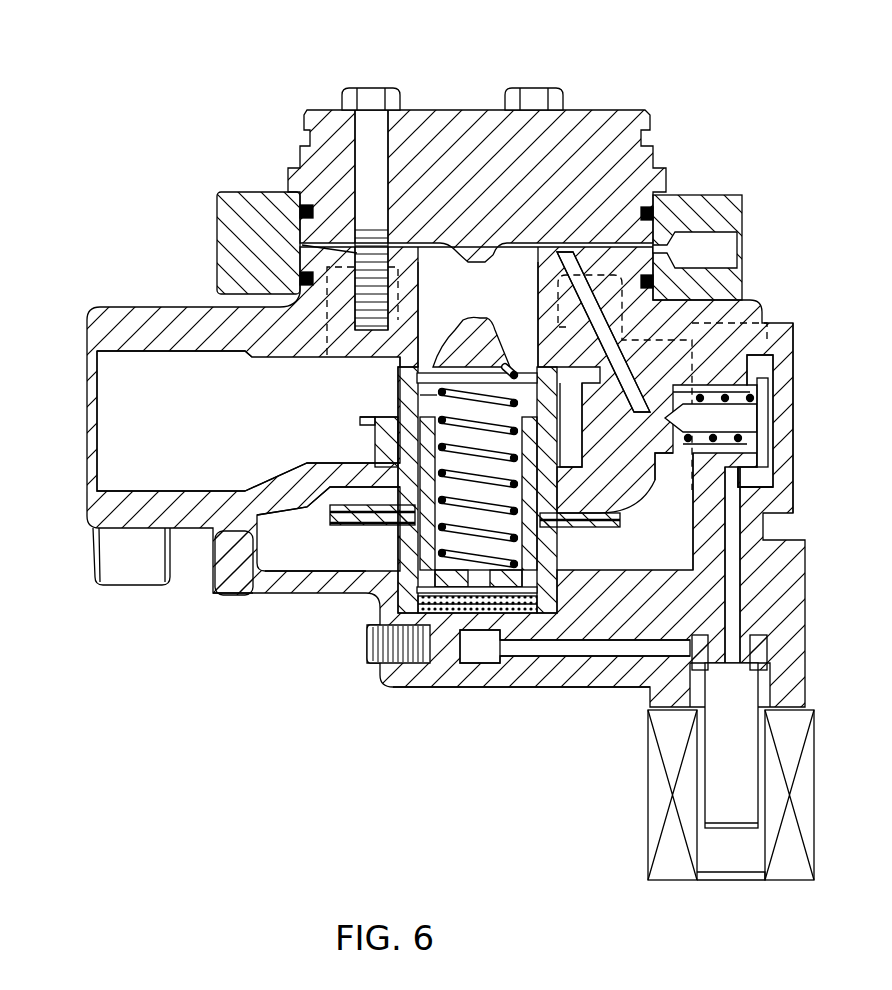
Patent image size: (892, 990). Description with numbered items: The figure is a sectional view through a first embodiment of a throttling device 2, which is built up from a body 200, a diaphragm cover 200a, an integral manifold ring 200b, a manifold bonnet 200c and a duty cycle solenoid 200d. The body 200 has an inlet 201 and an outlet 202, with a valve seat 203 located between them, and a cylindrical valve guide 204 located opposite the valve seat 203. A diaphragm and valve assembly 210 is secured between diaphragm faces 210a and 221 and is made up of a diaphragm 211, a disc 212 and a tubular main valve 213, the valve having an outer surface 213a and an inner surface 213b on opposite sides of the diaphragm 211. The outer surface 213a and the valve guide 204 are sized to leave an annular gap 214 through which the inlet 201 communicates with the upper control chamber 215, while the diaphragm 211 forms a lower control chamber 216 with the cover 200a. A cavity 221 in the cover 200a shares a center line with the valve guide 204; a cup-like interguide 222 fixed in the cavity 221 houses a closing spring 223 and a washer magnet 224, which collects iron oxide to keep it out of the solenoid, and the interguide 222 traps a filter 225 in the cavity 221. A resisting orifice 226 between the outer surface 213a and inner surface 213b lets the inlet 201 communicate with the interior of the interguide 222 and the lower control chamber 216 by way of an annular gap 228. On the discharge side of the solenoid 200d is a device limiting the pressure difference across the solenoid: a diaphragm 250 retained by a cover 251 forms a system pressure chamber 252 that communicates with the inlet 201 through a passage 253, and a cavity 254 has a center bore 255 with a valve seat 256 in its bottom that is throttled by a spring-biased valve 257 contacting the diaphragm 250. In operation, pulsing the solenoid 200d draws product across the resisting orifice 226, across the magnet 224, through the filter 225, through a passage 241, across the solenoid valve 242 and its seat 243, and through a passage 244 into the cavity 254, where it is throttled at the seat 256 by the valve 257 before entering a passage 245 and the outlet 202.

The throttling device 2 is at (175, 48).
The body 200 is at (230, 310).
The diaphragm cover 200a is at (592, 677).
The integral manifold ring 200b is at (262, 167).
The manifold bonnet 200c is at (403, 115).
The duty cycle solenoid 200d is at (648, 857).
The inlet 201 is at (105, 453).
The outlet 202 is at (494, 302).
The valve seat 203 is at (400, 367).
The cylindrical valve guide 204 is at (378, 418).
The diaphragm and valve assembly 210 is at (354, 526).
The diaphragm face 210a is at (205, 540).
The diaphragm 211 is at (300, 540).
The disc 212 is at (600, 530).
The tubular main valve 213 is at (397, 392).
The outer surface 213a is at (343, 410).
The inner surface 213b is at (418, 407).
The annular gap 214 is at (395, 488).
The upper control chamber 215 is at (237, 595).
The lower control chamber 216 is at (343, 567).
The cavity 221 is at (380, 617).
The interguide 222 is at (532, 548).
The closing spring 223 is at (430, 366).
The washer magnet 224 is at (417, 562).
The filter 225 is at (460, 640).
The resisting orifice 226 is at (558, 388).
The annular gap 228 is at (415, 528).
The passage 241 is at (632, 650).
The solenoid valve 242 is at (747, 695).
The seat 243 is at (743, 653).
The passage 244 is at (735, 530).
The passage 245 is at (556, 333).
The diaphragm 250 is at (757, 370).
The cover 251 is at (783, 443).
The system pressure chamber 252 is at (773, 477).
The passage 253 is at (752, 300).
The cavity 254 is at (783, 363).
The center bore 255 is at (727, 443).
The valve seat 256 is at (695, 445).
The valve 257 is at (763, 413).